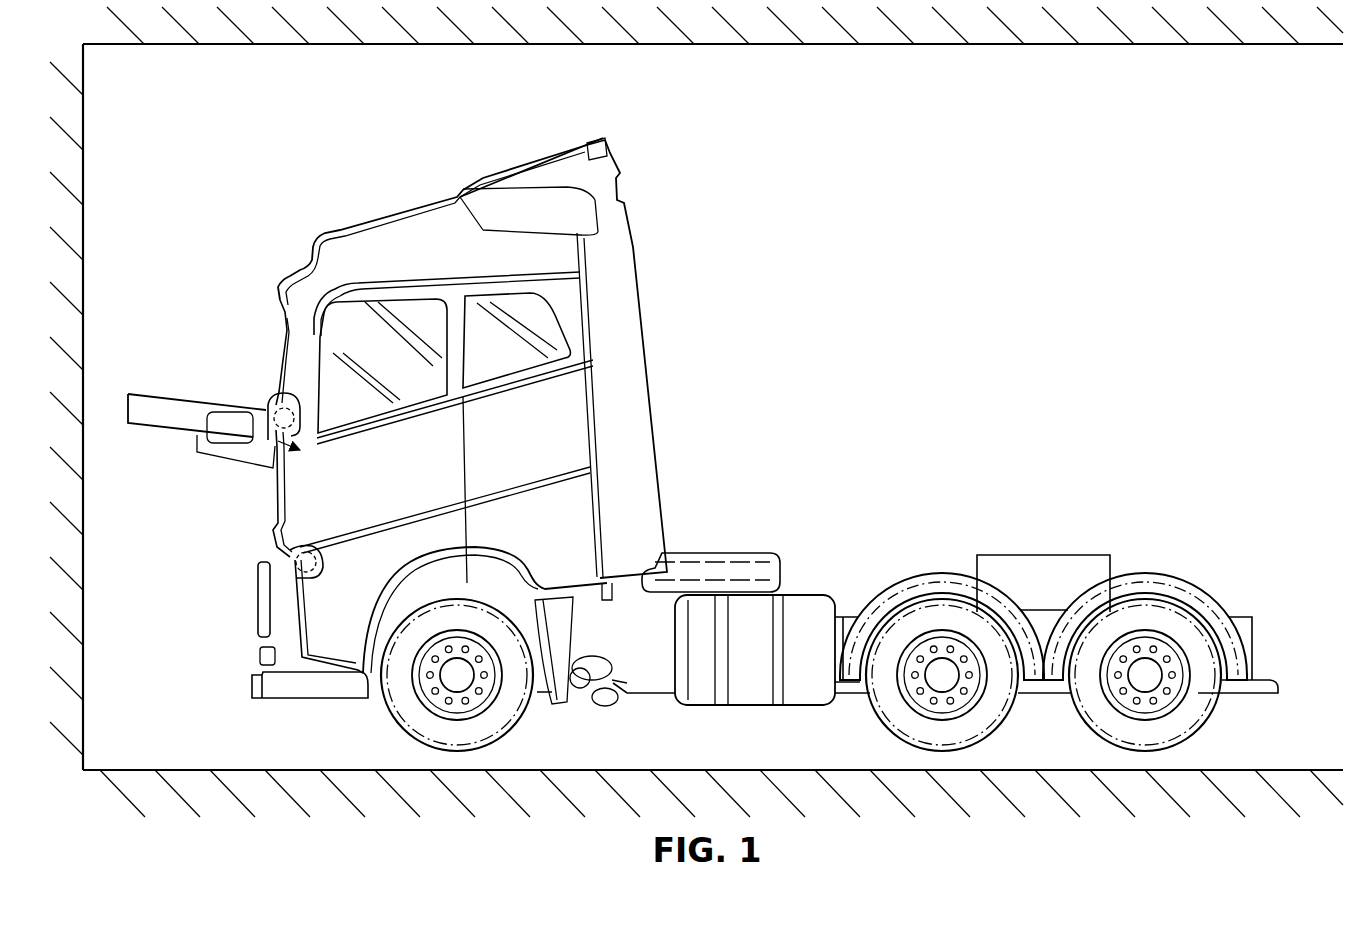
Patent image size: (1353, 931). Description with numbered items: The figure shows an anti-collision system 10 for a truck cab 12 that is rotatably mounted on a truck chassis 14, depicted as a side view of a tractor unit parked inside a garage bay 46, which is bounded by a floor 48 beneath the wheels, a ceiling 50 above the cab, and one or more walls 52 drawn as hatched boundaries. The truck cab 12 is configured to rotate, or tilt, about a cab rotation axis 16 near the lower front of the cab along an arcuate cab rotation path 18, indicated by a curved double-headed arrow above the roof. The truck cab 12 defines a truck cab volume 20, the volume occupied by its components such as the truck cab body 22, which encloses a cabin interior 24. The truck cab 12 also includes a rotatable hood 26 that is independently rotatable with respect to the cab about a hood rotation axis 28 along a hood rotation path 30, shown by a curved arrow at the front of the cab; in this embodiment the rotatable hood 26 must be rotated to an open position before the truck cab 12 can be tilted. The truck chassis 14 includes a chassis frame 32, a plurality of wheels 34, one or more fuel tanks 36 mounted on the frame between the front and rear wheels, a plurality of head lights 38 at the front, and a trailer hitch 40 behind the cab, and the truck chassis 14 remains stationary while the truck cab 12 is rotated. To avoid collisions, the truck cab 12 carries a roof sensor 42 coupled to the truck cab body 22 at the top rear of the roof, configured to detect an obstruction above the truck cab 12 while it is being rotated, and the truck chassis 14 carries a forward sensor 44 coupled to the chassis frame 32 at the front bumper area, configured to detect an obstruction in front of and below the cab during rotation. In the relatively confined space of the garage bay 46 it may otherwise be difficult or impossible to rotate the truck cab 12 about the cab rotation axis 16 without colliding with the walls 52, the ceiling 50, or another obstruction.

The anti-collision system 10 is at (192, 186).
The truck cab 12 is at (662, 360).
The truck chassis 14 is at (867, 558).
The cab rotation axis 16 is at (287, 558).
The cab rotation path 18 is at (422, 73).
The truck cab volume 20 is at (633, 247).
The truck cab body 22 is at (643, 407).
The cabin interior 24 is at (327, 347).
The rotatable hood 26 is at (160, 394).
The hood rotation axis 28 is at (280, 407).
The hood rotation path 30 is at (160, 440).
The chassis frame 32 is at (665, 613).
The wheels 34 is at (388, 712).
The fuel tanks 36 is at (820, 594).
The head lights 38 is at (257, 610).
The trailer hitch 40 is at (1043, 555).
The roof sensor 42 is at (600, 140).
The forward sensor 44 is at (252, 683).
The garage bay 46 is at (1104, 86).
The floor 48 is at (301, 805).
The ceiling 50 is at (301, 30).
The walls 52 is at (49, 386).